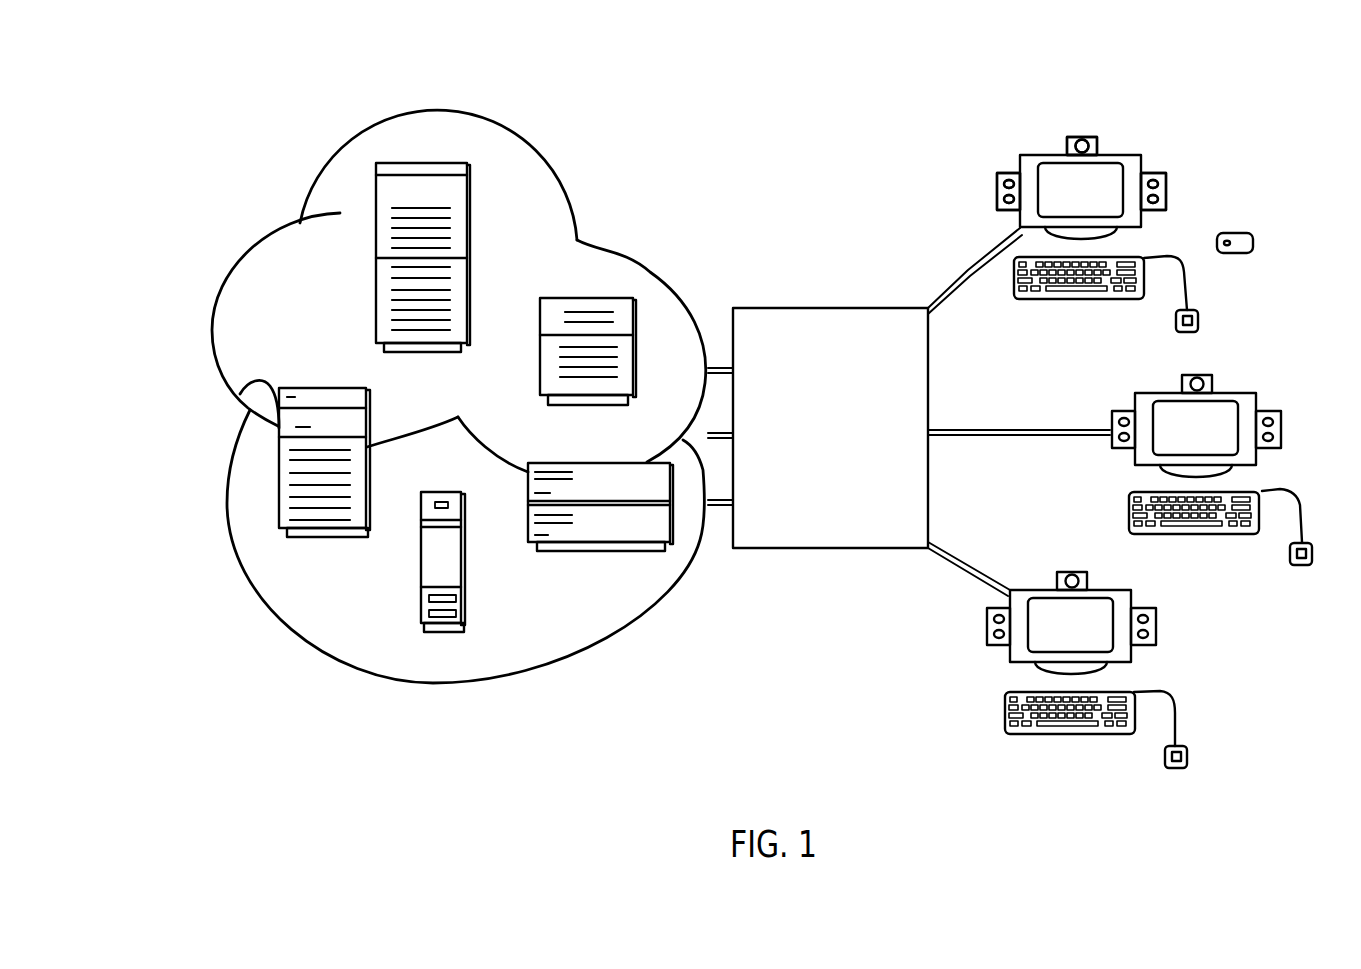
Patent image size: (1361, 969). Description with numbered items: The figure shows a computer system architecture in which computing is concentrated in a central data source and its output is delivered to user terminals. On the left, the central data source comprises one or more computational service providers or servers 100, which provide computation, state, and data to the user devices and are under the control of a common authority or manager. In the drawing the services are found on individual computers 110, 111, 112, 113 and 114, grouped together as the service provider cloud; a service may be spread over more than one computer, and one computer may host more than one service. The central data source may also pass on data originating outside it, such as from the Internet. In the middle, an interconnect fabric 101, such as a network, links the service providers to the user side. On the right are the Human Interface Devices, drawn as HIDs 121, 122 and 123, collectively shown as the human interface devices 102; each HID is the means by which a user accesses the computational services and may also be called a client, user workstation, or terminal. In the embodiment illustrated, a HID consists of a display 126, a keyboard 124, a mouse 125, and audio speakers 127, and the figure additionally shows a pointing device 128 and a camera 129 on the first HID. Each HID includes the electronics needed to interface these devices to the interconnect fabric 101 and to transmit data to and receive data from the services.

The computational service providers 100 is at (702, 58).
The interconnect fabric 101 is at (817, 548).
The human interface devices 102 is at (1298, 57).
The computer 110 is at (467, 163).
The computer 111 is at (633, 298).
The computer 112 is at (670, 542).
The computer 113 is at (420, 632).
The computer 114 is at (240, 394).
The HID 121 is at (1142, 157).
The HID 122 is at (1256, 395).
The HID 123 is at (1131, 591).
The keyboard 124 is at (1050, 299).
The mouse 125 is at (1197, 320).
The display 126 is at (1040, 157).
The audio speakers 127 is at (1167, 186).
The mouse 128 is at (1253, 243).
The camera 129 is at (1097, 140).